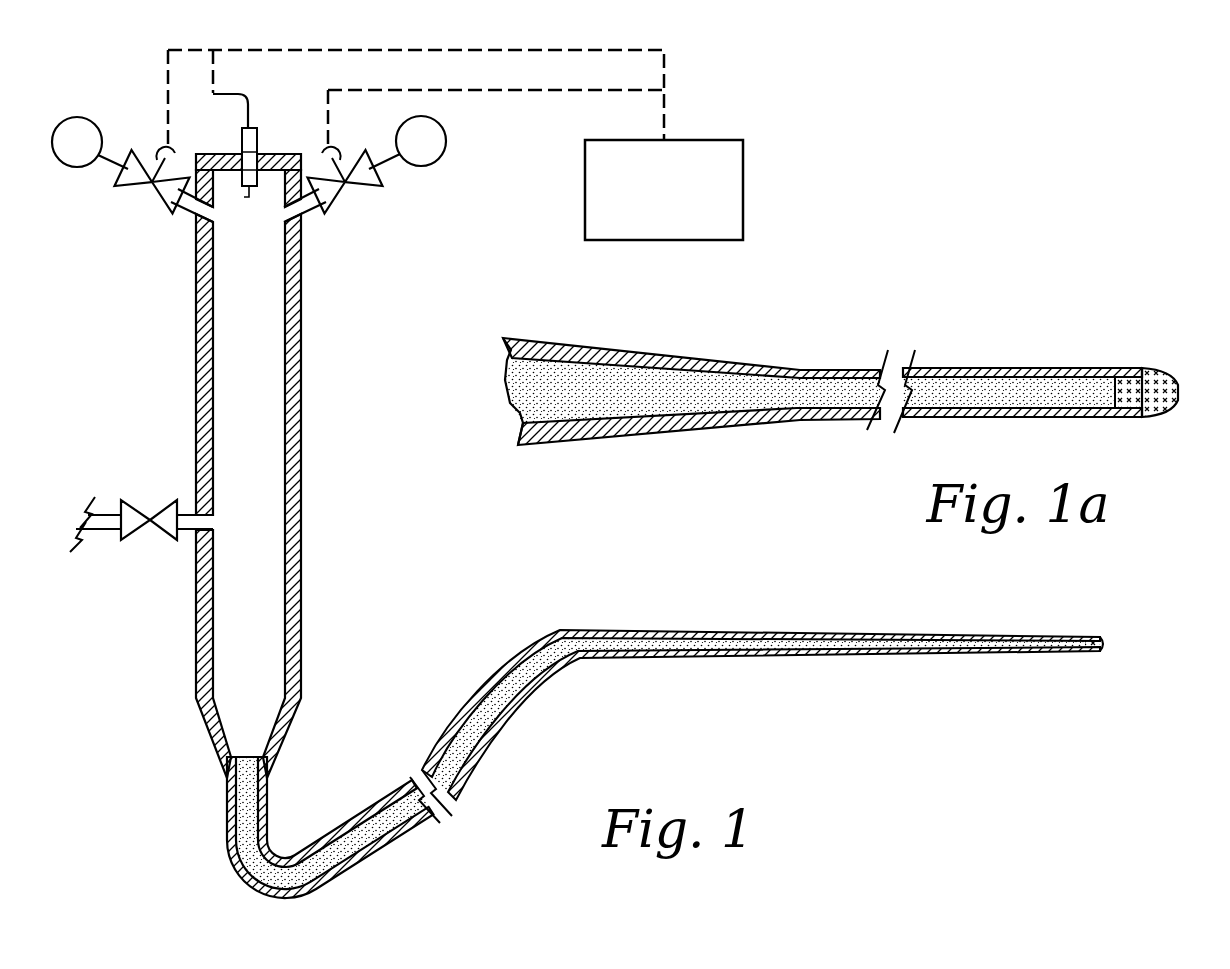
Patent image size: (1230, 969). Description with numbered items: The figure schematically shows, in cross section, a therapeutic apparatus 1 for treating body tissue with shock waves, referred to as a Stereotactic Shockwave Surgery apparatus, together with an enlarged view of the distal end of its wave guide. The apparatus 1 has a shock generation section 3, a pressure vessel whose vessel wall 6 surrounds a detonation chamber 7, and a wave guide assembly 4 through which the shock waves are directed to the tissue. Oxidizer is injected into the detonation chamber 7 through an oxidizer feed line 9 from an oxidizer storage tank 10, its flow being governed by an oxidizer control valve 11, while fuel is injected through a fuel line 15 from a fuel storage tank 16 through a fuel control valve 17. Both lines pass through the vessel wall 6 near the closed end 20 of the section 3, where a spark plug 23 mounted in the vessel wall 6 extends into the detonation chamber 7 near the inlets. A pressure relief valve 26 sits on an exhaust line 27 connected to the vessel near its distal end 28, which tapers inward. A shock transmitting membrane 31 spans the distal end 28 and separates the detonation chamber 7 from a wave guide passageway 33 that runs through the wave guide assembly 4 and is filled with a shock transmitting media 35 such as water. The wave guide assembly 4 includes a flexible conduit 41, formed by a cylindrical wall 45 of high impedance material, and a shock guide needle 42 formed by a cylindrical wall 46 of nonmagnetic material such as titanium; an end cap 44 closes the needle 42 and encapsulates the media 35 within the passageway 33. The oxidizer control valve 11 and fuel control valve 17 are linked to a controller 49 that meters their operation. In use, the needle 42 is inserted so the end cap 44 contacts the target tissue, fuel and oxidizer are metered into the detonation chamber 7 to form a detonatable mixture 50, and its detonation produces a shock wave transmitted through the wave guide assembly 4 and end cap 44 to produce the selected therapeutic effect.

In FIG. 1, the therapeutic apparatus 1 is at (727, 68).
In FIG. 1, the shock generation section 3 is at (300, 429).
In FIG. 1, the wave guide assembly 4 is at (657, 733).
In FIG. 1, the vessel wall 6 is at (301, 527).
In FIG. 1, the detonation chamber 7 is at (278, 560).
In FIG. 1, the oxidizer feed line 9 is at (312, 218).
In FIG. 1, the oxidizer storage tank 10 is at (447, 148).
In FIG. 1, the oxidizer control valve 11 is at (349, 192).
In FIG. 1, the fuel line 15 is at (183, 210).
In FIG. 1, the fuel storage tank 16 is at (83, 118).
In FIG. 1, the fuel control valve 17 is at (145, 190).
In FIG. 1, the closed end 20 is at (296, 156).
In FIG. 1, the spark plug 23 is at (252, 140).
In FIG. 1, the pressure relief valve 26 is at (150, 518).
In FIG. 1, the exhaust line 27 is at (183, 548).
In FIG. 1, the distal end 28 is at (302, 697).
In FIG. 1, the shock transmitting membrane 31 is at (247, 752).
In FIG. 1, the wave guide passageway 33 is at (383, 849).
In FIG. 1, the shock transmitting media 35 is at (245, 817).
In FIG. 1A, the shock transmitting media 35 is at (717, 388).
In FIG. 1, the flexible conduit 41 is at (308, 853).
In FIG. 1A, the flexible conduit 41 is at (602, 350).
In FIG. 1, the shock guide needle 42 is at (923, 638).
In FIG. 1A, the shock guide needle 42 is at (1012, 378).
In FIG. 1, the end cap 44 is at (1103, 645).
In FIG. 1A, the end cap 44 is at (1163, 369).
In FIG. 1, the cylindrical wall 45 is at (537, 665).
In FIG. 1, the cylindrical wall 46 is at (977, 653).
In FIG. 1A, the cylindrical wall 46 is at (957, 418).
In FIG. 1, the controller 49 is at (745, 175).
In FIG. 1, the detonatable mixture 50 is at (253, 370).